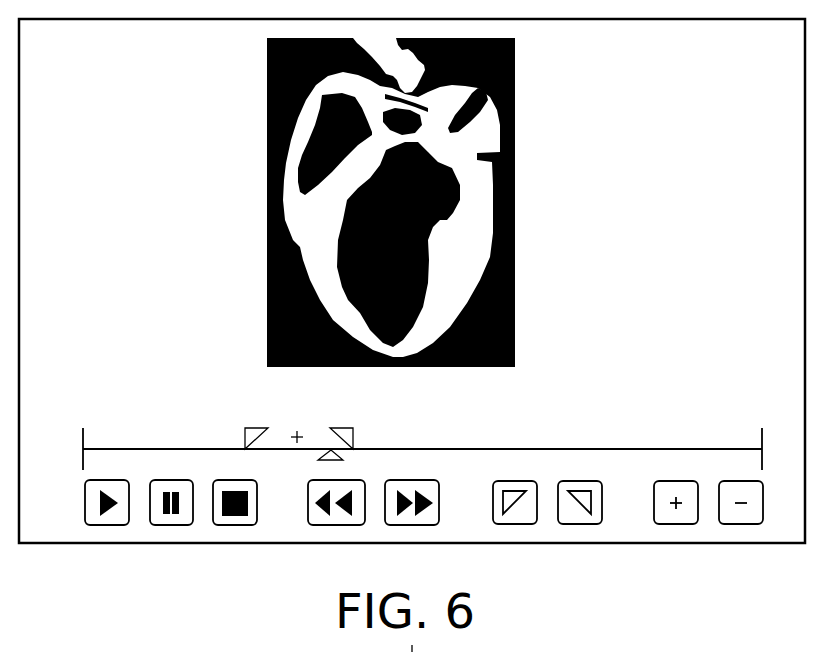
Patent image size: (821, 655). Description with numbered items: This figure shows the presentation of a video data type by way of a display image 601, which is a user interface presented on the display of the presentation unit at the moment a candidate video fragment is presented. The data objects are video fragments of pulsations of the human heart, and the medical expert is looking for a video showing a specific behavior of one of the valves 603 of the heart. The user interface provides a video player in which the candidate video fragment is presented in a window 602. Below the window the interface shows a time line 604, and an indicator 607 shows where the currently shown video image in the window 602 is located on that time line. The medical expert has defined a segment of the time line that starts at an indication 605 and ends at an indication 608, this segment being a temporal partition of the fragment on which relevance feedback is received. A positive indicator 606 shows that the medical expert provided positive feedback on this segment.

The display image 601 is at (82, 56).
The window 602 is at (267, 139).
The valve 603 is at (477, 138).
The time line 604 is at (83, 431).
The indication 605 is at (245, 443).
The positive indicator 606 is at (297, 430).
The indicator 607 is at (343, 457).
The indication 608 is at (353, 438).